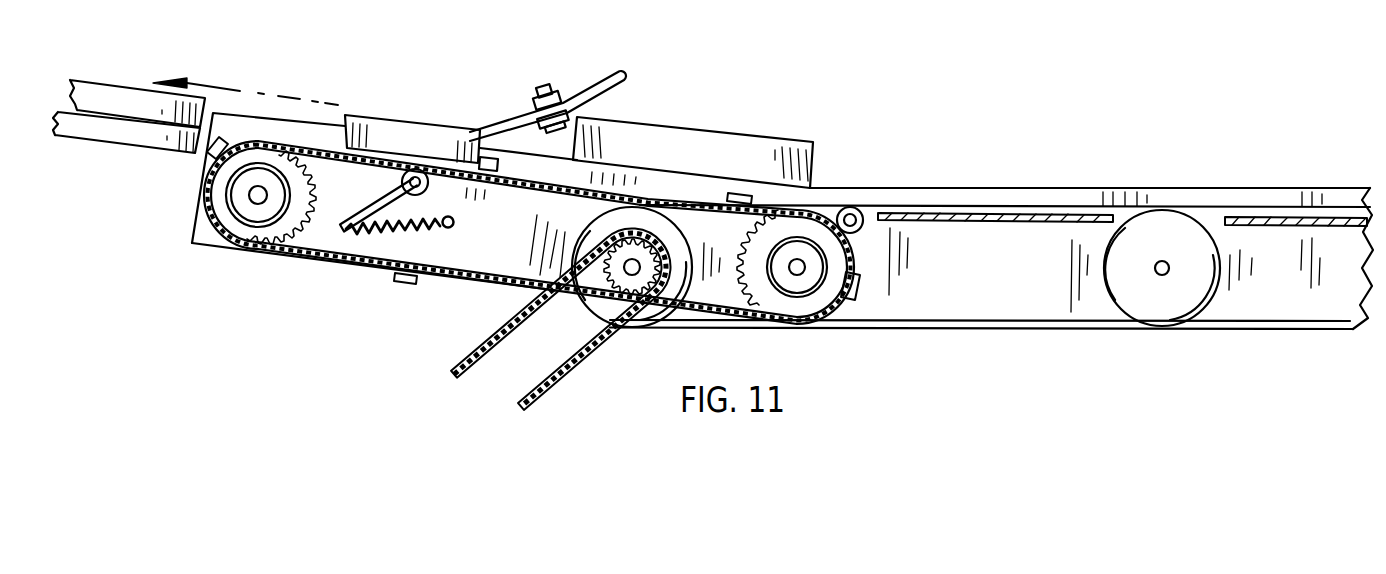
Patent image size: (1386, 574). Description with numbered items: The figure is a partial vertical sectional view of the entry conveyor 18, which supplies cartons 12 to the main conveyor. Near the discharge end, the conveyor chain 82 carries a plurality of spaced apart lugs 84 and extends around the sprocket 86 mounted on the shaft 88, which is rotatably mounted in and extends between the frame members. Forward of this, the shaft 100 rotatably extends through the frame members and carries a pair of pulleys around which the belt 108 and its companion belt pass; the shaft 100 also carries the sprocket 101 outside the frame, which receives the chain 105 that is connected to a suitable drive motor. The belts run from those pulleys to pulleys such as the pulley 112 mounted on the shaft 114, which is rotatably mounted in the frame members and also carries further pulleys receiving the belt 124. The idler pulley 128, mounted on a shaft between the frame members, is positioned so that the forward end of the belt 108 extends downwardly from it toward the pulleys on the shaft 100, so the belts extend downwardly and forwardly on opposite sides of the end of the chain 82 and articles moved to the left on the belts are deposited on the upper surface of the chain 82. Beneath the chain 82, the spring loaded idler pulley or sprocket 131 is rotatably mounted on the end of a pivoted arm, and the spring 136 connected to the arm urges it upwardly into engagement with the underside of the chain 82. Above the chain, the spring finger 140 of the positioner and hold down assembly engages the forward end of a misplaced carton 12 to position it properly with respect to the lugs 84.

The carton 12 is at (415, 140).
The entry conveyor 18 is at (806, 130).
The conveyor chain 82 is at (318, 258).
The lugs 84 is at (216, 142).
The sprocket 86 is at (763, 293).
The shaft 88 is at (800, 272).
The shaft 100 is at (638, 278).
The sprocket 101 is at (615, 287).
The chain 105 is at (472, 333).
The belt 108 is at (992, 327).
The pulley 112 is at (1177, 230).
The shaft 114 is at (1167, 272).
The belt 124 is at (1263, 207).
The idler pulley 128 is at (863, 228).
The spring loaded idler pulley or sprocket 131 is at (425, 188).
The spring 136 is at (397, 236).
The spring finger 140 is at (478, 118).